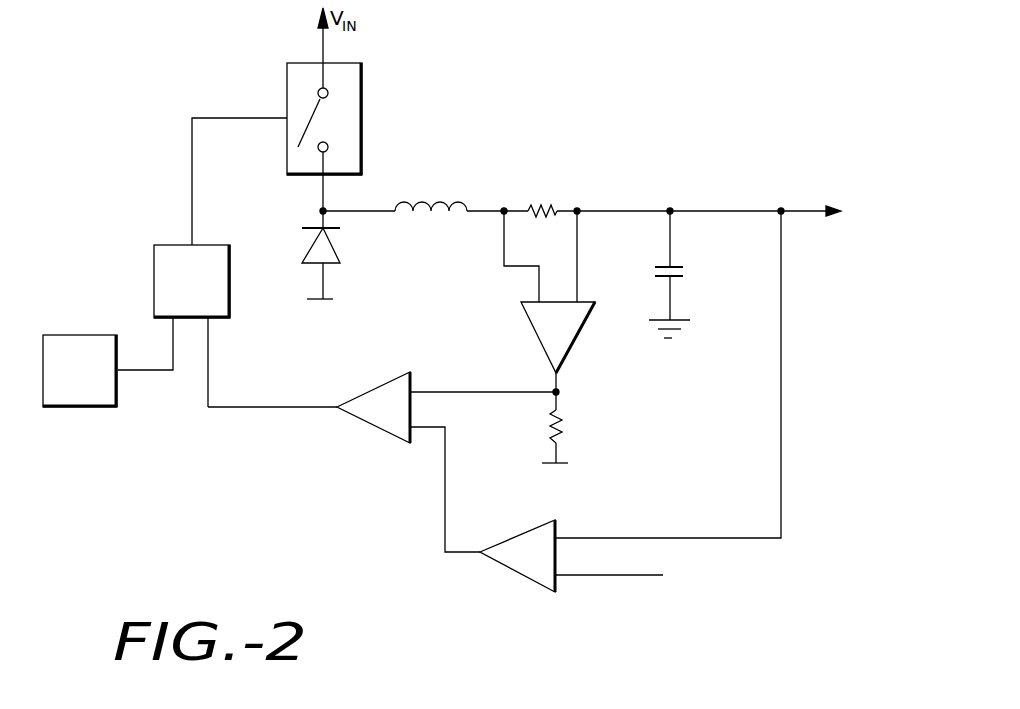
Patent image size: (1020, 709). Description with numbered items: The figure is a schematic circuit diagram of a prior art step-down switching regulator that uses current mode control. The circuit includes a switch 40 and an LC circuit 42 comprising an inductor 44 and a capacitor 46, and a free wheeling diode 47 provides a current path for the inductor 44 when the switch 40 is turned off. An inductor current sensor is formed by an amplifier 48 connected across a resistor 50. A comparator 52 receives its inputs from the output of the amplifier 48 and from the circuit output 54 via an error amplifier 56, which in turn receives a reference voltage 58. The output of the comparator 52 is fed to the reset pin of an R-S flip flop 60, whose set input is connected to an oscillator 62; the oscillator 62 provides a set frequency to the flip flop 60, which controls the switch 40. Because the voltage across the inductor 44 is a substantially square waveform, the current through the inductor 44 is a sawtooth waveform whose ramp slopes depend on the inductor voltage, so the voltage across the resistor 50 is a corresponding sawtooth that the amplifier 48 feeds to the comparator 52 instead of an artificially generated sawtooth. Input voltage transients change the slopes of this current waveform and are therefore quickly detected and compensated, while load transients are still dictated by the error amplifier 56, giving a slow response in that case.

The switch 40 is at (382, 78).
The LC circuit 42 is at (445, 178).
The inductor 44 is at (424, 231).
The capacitor 46 is at (696, 284).
The free wheeling diode 47 is at (310, 247).
The amplifier 48 is at (588, 350).
The resistor 50 is at (552, 190).
The comparator 52 is at (365, 377).
The circuit output 54 is at (840, 185).
The error amplifier 56 is at (503, 519).
The reference voltage 58 is at (719, 596).
The R-S flip flop 60 is at (154, 262).
The oscillator 62 is at (80, 408).